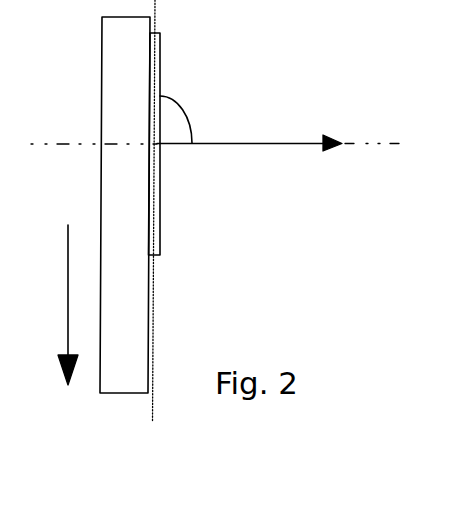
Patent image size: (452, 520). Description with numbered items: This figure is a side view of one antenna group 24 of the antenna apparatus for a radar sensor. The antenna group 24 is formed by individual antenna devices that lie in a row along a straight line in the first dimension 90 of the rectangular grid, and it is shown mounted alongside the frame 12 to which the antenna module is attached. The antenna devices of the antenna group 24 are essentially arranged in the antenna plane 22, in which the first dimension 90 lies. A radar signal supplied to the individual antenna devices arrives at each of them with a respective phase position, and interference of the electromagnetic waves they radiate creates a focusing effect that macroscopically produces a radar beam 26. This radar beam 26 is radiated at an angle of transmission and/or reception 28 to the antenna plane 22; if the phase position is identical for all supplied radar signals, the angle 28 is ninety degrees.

The frame 12 is at (112, 379).
The antenna plane 22 is at (152, 412).
The antenna group 24 is at (161, 40).
The radar beam 26 is at (287, 142).
The angle of transmission and/or reception 28 is at (175, 127).
The first dimension 90 is at (68, 282).